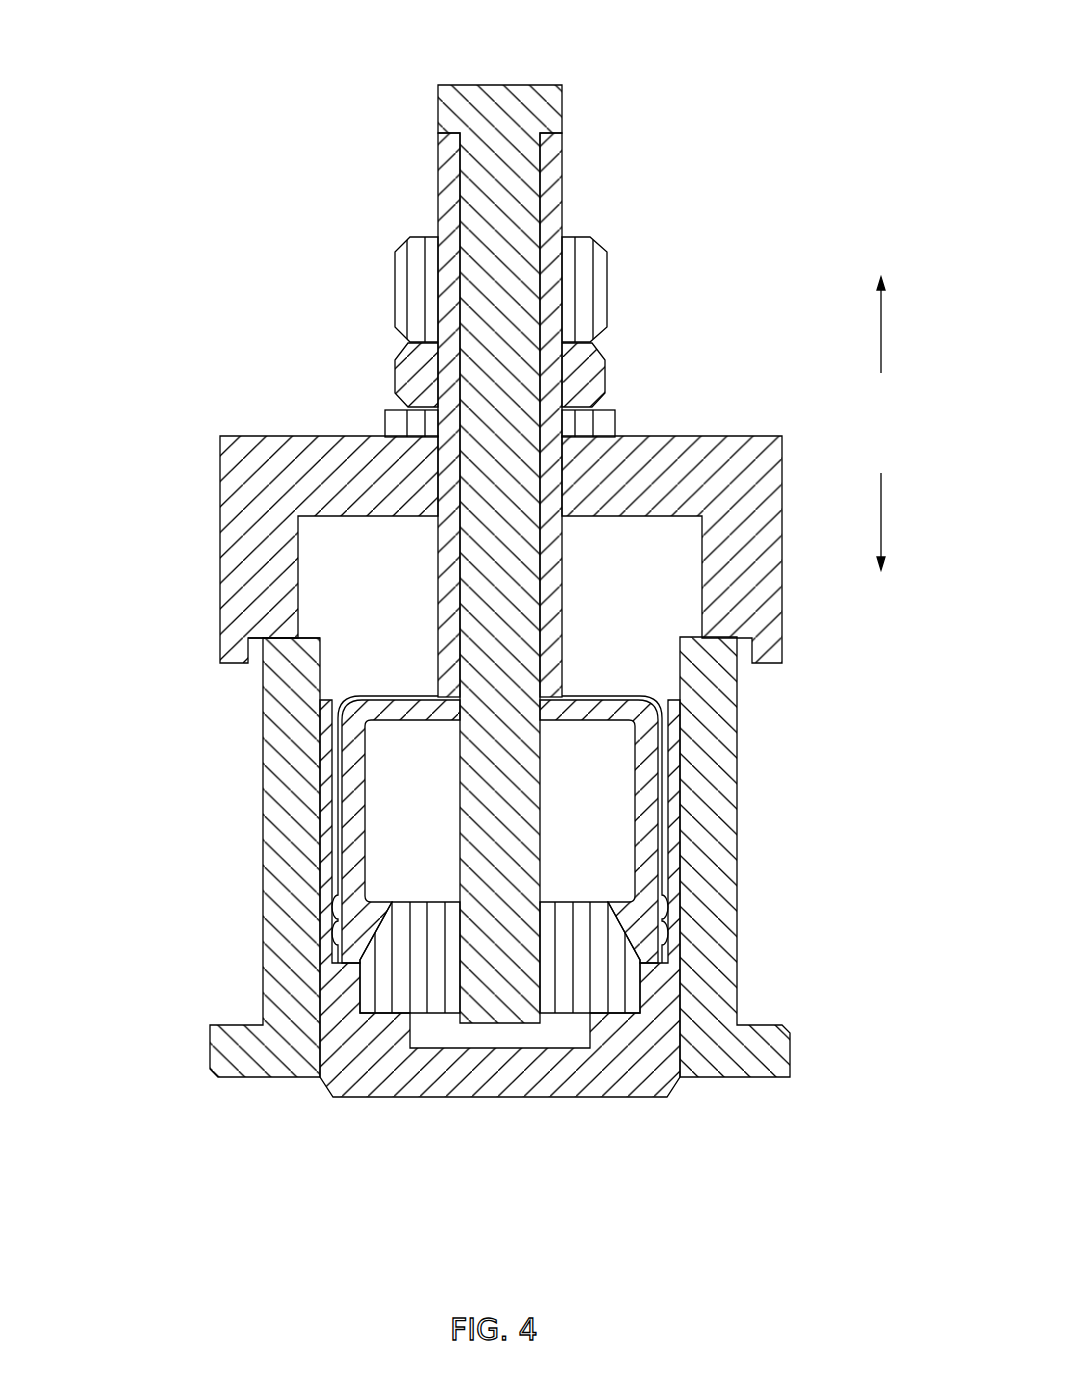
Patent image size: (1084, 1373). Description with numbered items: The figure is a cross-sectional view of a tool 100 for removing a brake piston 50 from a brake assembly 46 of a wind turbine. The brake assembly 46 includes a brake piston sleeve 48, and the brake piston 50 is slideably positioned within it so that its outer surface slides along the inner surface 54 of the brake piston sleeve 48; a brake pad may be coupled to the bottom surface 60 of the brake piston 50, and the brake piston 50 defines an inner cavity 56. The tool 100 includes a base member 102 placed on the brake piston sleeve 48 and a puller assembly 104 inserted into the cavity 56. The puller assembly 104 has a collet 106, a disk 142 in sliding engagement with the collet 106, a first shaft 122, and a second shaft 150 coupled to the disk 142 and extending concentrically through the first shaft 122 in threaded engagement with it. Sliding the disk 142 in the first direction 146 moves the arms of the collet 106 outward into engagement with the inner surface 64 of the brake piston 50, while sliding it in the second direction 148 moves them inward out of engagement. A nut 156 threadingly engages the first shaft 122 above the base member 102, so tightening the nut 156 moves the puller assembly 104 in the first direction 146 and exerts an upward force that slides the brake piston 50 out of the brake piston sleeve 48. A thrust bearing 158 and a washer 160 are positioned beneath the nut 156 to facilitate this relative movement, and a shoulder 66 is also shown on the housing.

The tool 100 is at (160, 103).
The base member 102 is at (248, 436).
The puller assembly 104 is at (368, 200).
The first shaft 122 is at (552, 210).
The nut 156 is at (608, 292).
The thrust bearing 158 is at (608, 375).
The washer 160 is at (383, 415).
The first direction 146 is at (881, 340).
The second direction 148 is at (881, 510).
The brake assembly 46 is at (188, 880).
The brake piston sleeve 48 is at (737, 818).
The brake piston 50 is at (382, 1078).
The bottom surface 60 is at (612, 1097).
The inner surface 54 is at (322, 680).
The inner cavity 56 is at (343, 704).
The inner surface 64 is at (664, 706).
The shoulder 66 is at (307, 638).
The collet 106 is at (365, 772).
The second shaft 150 is at (540, 848).
The disk 142 is at (433, 900).